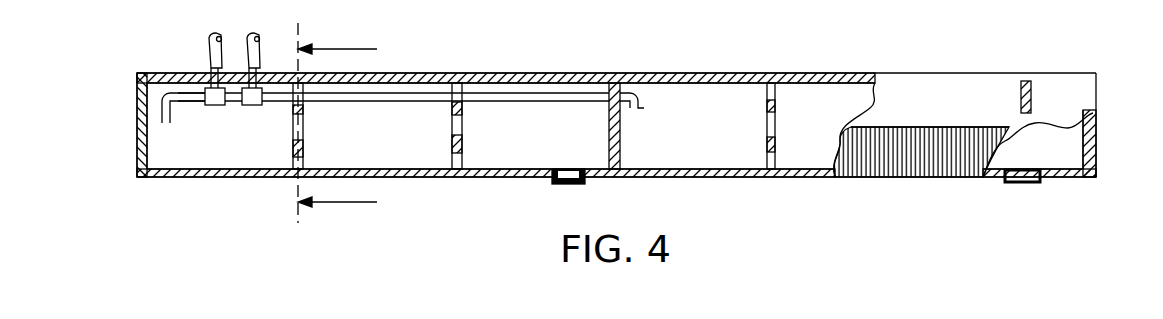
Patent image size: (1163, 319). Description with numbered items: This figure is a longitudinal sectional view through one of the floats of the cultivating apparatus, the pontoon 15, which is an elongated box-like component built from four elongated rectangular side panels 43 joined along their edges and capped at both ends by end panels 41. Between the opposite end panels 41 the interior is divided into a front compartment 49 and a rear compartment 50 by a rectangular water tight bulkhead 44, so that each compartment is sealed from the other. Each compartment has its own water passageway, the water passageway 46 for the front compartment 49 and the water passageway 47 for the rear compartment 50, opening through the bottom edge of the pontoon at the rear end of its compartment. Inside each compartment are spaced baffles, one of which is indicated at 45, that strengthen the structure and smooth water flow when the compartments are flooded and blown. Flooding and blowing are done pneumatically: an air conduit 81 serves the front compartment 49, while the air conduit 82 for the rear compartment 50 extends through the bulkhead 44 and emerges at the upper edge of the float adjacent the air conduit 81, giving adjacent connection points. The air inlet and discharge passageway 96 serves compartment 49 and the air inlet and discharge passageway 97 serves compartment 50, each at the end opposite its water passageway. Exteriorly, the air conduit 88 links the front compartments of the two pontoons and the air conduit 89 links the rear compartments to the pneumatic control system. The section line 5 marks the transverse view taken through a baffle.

The pontoon 15 is at (610, 103).
The end panel 41 is at (137, 117).
The side panel 43 is at (630, 73).
The bulkhead 44 is at (620, 147).
The partition wall 45 is at (292, 128).
The water passageway 46 is at (547, 185).
The water passageway 47 is at (1005, 181).
The front compartment 49 is at (430, 153).
The rear compartment 50 is at (722, 152).
The air conduit 81 is at (217, 97).
The air conduit 82 is at (337, 102).
The air conduit 88 is at (212, 53).
The air conduit 89 is at (257, 45).
The air inlet and discharge passageway 96 is at (172, 108).
The air inlet and discharge passageway 97 is at (643, 108).
The section line 5- 5 is at (337, 127).